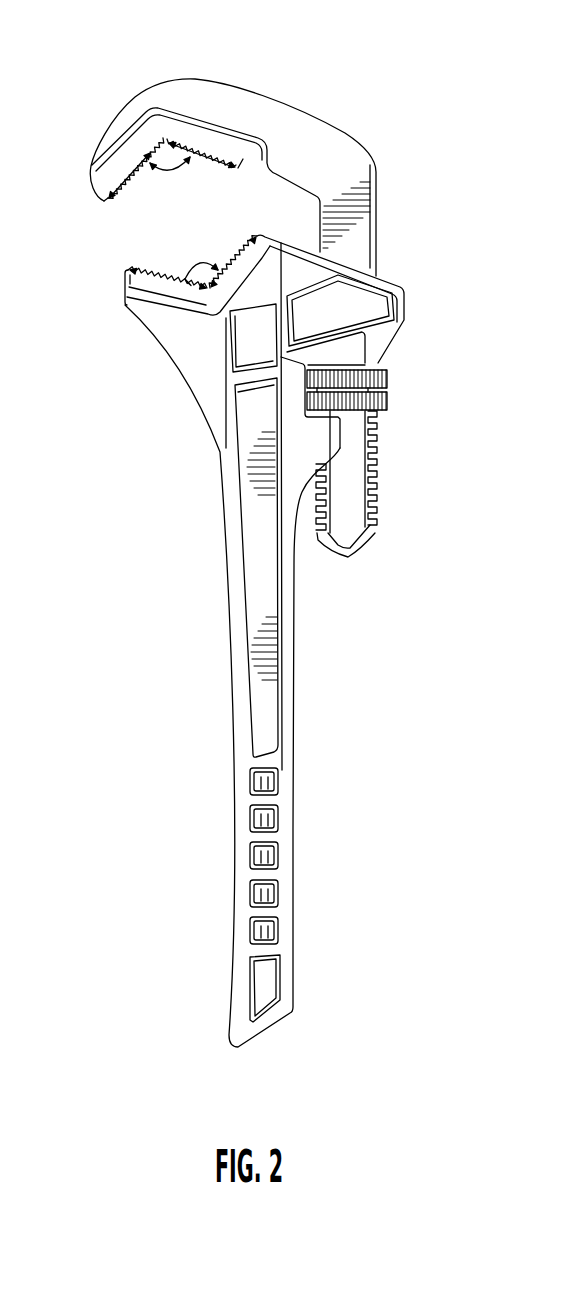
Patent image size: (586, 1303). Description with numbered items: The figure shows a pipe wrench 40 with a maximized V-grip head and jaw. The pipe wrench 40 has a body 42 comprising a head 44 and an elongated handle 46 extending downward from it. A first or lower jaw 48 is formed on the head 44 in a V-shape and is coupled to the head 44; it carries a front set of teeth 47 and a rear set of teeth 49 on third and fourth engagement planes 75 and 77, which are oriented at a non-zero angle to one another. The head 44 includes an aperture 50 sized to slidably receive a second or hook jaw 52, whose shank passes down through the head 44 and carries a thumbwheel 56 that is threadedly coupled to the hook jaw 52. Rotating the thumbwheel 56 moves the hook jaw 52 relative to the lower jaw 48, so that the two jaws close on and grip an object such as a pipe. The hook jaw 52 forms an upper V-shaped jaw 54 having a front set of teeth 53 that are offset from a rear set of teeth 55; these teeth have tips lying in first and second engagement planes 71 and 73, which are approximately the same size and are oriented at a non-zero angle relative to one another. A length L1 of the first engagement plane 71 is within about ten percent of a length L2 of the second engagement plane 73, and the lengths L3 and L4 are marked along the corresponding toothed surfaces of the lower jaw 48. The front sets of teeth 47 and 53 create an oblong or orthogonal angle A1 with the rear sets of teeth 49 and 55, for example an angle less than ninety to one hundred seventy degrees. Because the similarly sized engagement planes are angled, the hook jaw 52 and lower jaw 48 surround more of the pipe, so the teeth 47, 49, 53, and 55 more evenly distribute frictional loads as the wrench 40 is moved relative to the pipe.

The pipe wrench 40 is at (424, 172).
The body 42 is at (233, 716).
The head 44 is at (408, 306).
The handle 46 is at (296, 840).
The front set of teeth 47 is at (178, 289).
The lower jaw 48 is at (128, 269).
The rear set of teeth 49 is at (250, 242).
The aperture 50 is at (392, 283).
The hook jaw 52 is at (283, 102).
The front set of teeth 53 is at (145, 150).
The upper V-shaped jaw 54 is at (128, 199).
The rear set of teeth 55 is at (232, 170).
The thumbwheel 56 is at (388, 400).
The first engagement plane 71 is at (141, 158).
The second engagement plane 73 is at (195, 150).
The third engagement plane 75 is at (125, 304).
The fourth engagement plane 77 is at (243, 242).
The length of first engagement plane L1 is at (142, 160).
The length of second engagement plane L2 is at (200, 156).
The third gripping surface length L3 is at (174, 282).
The fourth gripping surface length L4 is at (238, 266).
The angle A1 is at (170, 167).